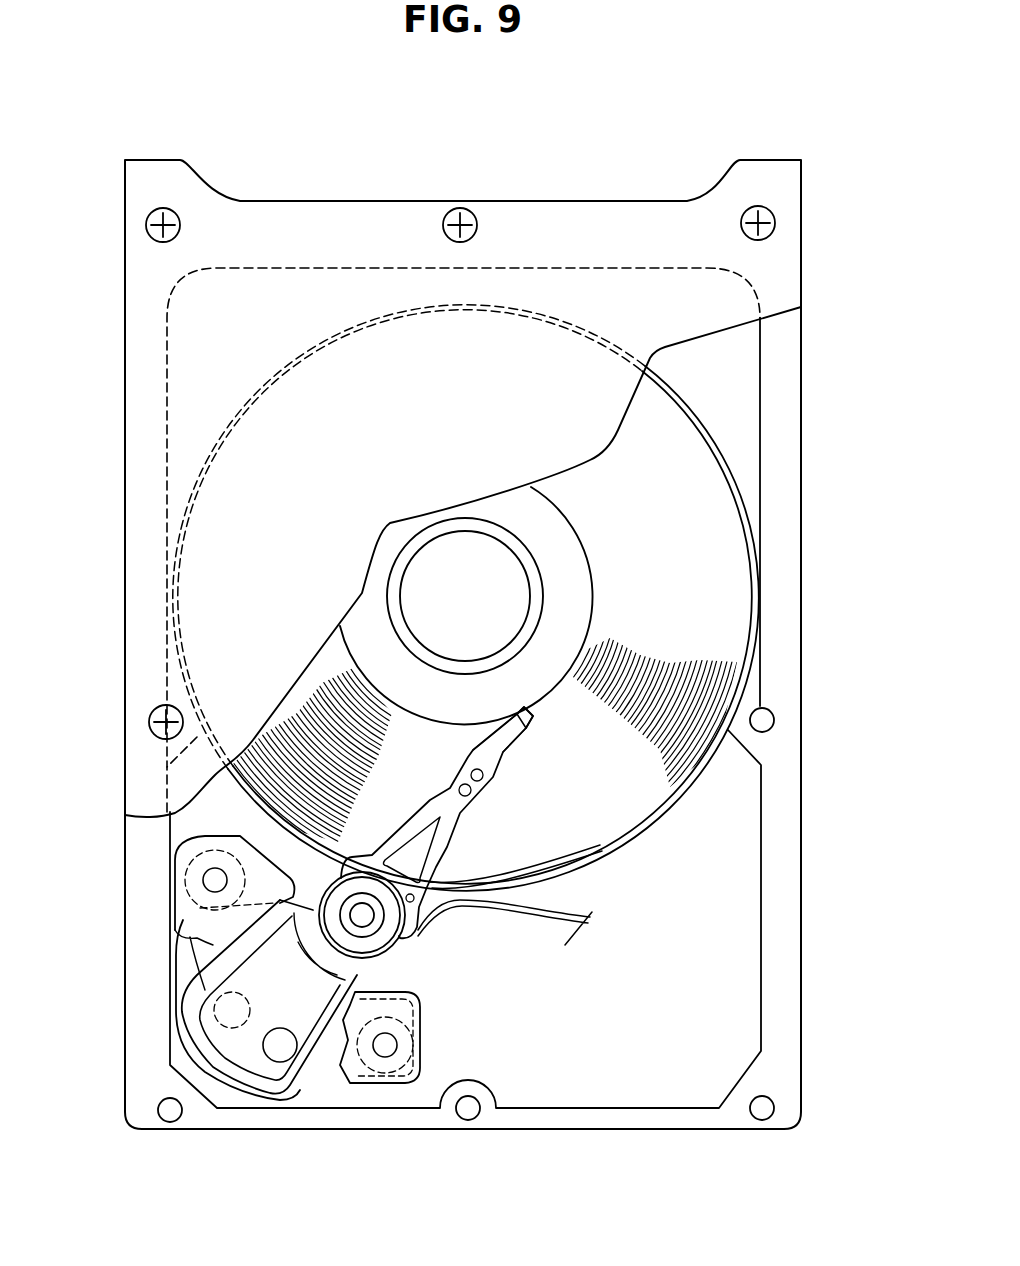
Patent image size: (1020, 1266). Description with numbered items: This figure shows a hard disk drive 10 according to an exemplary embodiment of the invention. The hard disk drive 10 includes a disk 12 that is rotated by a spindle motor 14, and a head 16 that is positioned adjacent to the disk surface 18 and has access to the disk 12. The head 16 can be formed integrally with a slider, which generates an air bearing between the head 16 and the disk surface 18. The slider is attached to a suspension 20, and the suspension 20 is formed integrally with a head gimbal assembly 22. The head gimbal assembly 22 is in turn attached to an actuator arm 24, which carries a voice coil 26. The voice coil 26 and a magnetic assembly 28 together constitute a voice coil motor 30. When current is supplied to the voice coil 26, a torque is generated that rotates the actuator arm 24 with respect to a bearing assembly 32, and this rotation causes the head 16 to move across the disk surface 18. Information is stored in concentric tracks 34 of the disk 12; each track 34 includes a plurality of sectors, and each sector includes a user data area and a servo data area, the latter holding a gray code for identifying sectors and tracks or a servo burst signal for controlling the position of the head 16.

The hard disk drive 10 is at (640, 136).
The disk 12 is at (712, 530).
The spindle motor 14 is at (440, 570).
The head 16 is at (530, 728).
The disk surface 18 is at (701, 611).
The suspension 20 is at (503, 750).
The head gimbal assembly 22 is at (455, 853).
The actuator arm 24 is at (270, 932).
The voice coil 26 is at (200, 1000).
The magnetic assembly 28 is at (213, 945).
The voice coil motor 30 is at (335, 1078).
The bearing assembly 32 is at (372, 925).
The tracks 34 is at (325, 715).